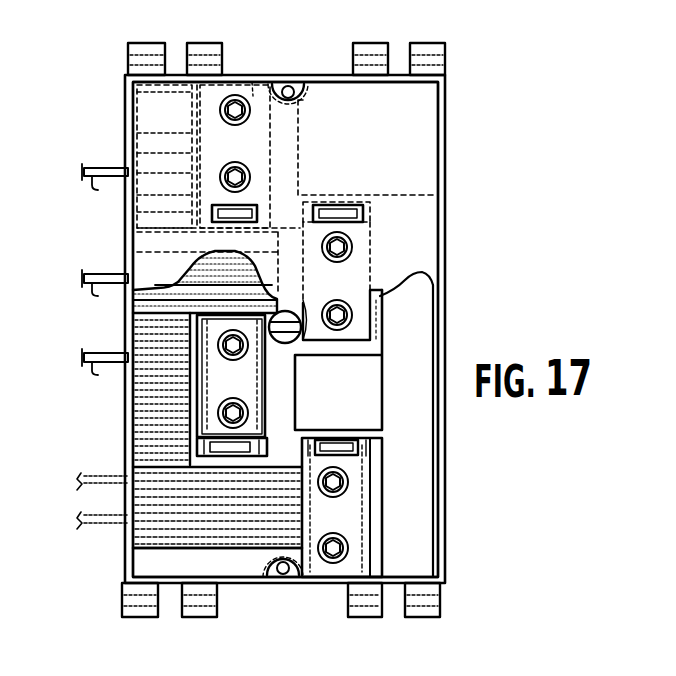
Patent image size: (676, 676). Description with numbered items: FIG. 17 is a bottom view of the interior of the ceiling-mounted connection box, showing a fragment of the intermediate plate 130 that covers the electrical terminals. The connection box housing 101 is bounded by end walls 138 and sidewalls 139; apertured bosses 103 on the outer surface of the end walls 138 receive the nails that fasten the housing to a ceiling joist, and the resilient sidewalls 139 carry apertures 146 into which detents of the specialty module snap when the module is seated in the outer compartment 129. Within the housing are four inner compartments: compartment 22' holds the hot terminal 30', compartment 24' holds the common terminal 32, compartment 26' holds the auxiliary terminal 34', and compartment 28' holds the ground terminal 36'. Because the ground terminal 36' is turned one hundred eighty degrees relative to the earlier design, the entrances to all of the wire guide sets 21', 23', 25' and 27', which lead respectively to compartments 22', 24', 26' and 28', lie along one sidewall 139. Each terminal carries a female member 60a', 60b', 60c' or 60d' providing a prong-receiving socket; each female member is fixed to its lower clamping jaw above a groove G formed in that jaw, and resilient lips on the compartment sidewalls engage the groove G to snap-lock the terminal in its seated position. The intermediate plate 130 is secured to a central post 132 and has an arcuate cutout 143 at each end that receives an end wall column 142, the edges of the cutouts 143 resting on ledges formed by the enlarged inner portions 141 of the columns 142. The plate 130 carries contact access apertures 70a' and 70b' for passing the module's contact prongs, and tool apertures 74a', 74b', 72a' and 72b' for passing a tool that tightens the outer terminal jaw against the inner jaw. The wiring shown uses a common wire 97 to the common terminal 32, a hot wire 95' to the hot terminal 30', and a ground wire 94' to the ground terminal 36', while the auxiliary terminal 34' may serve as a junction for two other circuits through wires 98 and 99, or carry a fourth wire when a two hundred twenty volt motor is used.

The connection box housing 101 is at (446, 186).
The apertured bosses 103 is at (184, 43).
The outer compartment 129 is at (410, 106).
The intermediate plate 130 is at (440, 313).
The central post 132 is at (281, 344).
The housing end walls 138 is at (278, 73).
The housing sidewalls 139 is at (128, 90).
The enlarged inner portions 141 is at (306, 88).
The end wall columns 142 is at (297, 102).
The arcuate cutout 143 is at (296, 73).
The apertures 146 is at (127, 265).
The common terminal 32 is at (252, 80).
The wire guide set 21' is at (194, 156).
The inner compartment 22' is at (361, 315).
The wire guide set 23' is at (140, 156).
The inner compartment 24' is at (354, 147).
The wire guide set 25' is at (193, 566).
The inner compartment 26' is at (392, 507).
The wire guide set 27' is at (139, 389).
The inner compartment 28' is at (195, 495).
The hot terminal 30' is at (357, 360).
The auxiliary terminal 34' is at (396, 508).
The ground terminal 36' is at (286, 376).
The female member 60a' is at (399, 209).
The female member 60b' is at (178, 265).
The female member 60c' is at (269, 428).
The female member 60d' is at (400, 464).
The contact access aperture 70a' is at (372, 193).
The contact access aperture 70b' is at (279, 193).
The tool aperture 72a' is at (367, 259).
The tool aperture 72b' is at (376, 285).
The tool aperture 74a' is at (175, 156).
The tool aperture 74b' is at (165, 161).
The ground wire 94' is at (105, 376).
The hot wire 95' is at (105, 298).
The common wire 97 is at (85, 176).
The wire 98 is at (78, 488).
The wire 99 is at (78, 528).
The groove G is at (378, 320).